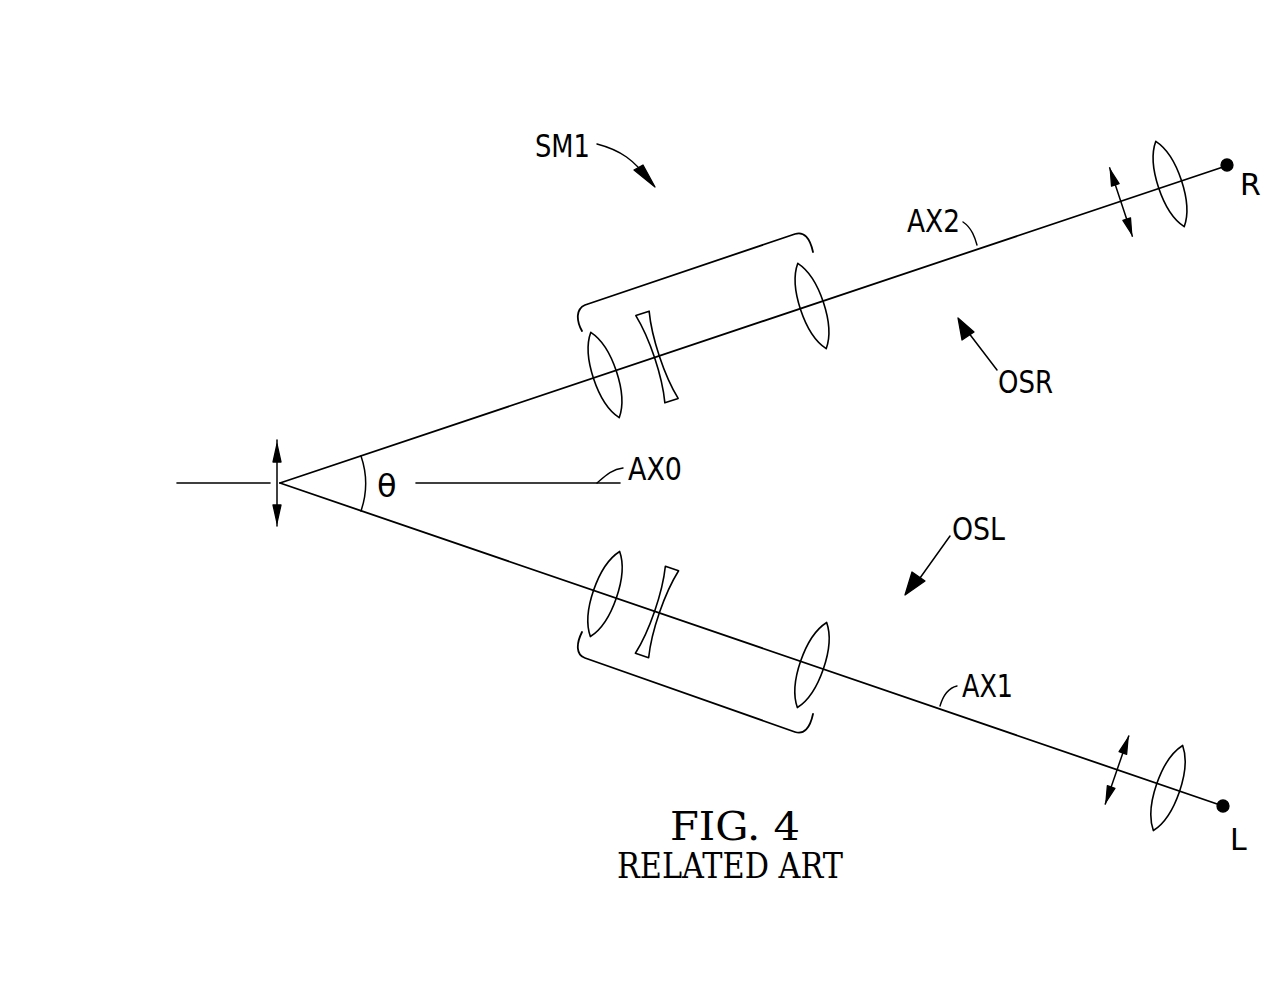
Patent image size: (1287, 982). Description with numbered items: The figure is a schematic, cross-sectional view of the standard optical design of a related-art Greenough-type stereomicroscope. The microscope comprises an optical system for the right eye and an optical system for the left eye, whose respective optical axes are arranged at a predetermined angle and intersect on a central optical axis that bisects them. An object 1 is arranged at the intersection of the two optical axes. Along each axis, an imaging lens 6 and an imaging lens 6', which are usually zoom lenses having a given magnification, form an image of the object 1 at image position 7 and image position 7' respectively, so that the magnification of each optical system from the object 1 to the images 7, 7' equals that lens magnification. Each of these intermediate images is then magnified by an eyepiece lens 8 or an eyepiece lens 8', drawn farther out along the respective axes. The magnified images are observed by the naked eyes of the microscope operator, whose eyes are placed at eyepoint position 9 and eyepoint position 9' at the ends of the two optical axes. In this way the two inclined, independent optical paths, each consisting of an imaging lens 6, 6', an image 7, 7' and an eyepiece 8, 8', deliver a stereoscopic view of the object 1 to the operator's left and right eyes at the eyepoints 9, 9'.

The object 1 is at (275, 491).
The imaging lens 6 is at (708, 662).
The imaging lens 6' is at (708, 312).
The image position 7 is at (1093, 770).
The image position 7' is at (1098, 200).
The eyepiece lens 8 is at (1161, 814).
The eyepiece lens 8' is at (1164, 155).
The eyepoint position 9 is at (1244, 790).
The eyepoint position 9' is at (1247, 140).